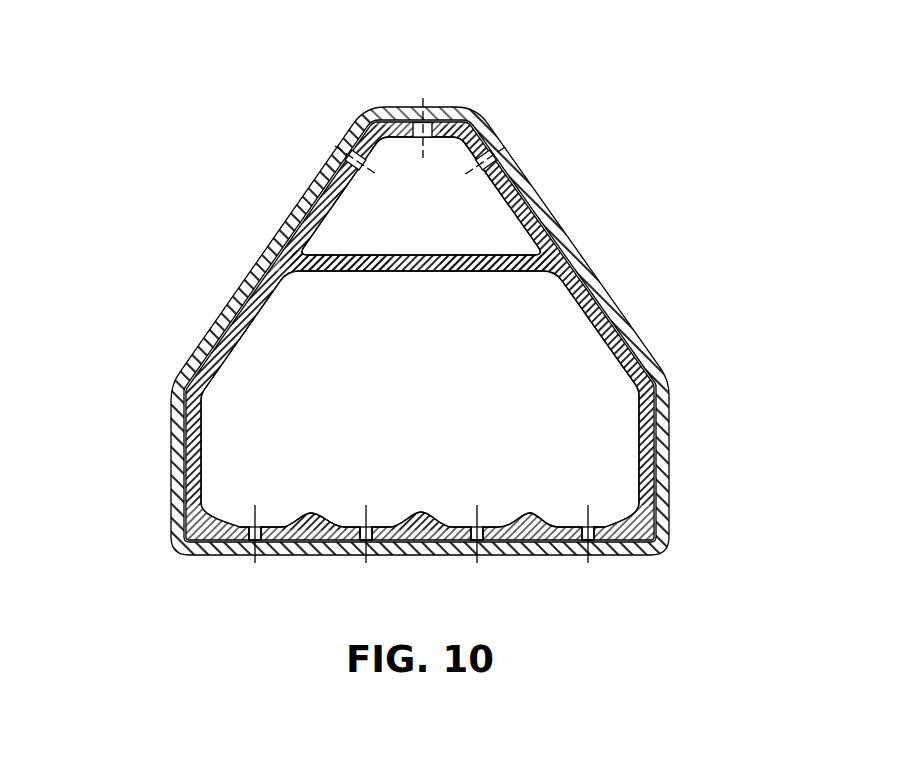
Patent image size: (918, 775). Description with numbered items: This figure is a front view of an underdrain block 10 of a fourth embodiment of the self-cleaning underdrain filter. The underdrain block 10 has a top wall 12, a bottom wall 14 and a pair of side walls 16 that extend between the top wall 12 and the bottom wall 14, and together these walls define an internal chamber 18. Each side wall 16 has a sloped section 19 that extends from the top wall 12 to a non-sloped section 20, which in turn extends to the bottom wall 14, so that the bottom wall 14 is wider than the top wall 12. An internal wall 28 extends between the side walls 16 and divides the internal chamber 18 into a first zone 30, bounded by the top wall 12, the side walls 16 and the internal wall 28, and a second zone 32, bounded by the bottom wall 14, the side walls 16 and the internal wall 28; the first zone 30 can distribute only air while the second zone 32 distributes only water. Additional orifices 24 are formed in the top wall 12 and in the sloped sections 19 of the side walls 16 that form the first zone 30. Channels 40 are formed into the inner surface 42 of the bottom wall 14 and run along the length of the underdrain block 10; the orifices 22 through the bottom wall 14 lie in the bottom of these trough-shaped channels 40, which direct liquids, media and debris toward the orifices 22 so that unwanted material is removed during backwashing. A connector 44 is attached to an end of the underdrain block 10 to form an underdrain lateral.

The underdrain block 10 is at (690, 112).
The top wall 12 is at (456, 143).
The bottom wall 14 is at (328, 508).
The side walls 16 is at (230, 360).
The internal chamber 18 is at (409, 373).
The sloped section 19 is at (268, 293).
The non-sloped section 20 is at (202, 428).
The orifices 22 is at (250, 540).
The additional orifices 24 is at (335, 152).
The internal wall 28 is at (367, 252).
The first zone 30 is at (497, 216).
The second zone 32 is at (594, 423).
The internal channels 40 is at (233, 518).
The inner surface 42 is at (428, 505).
The connector 44 is at (238, 283).